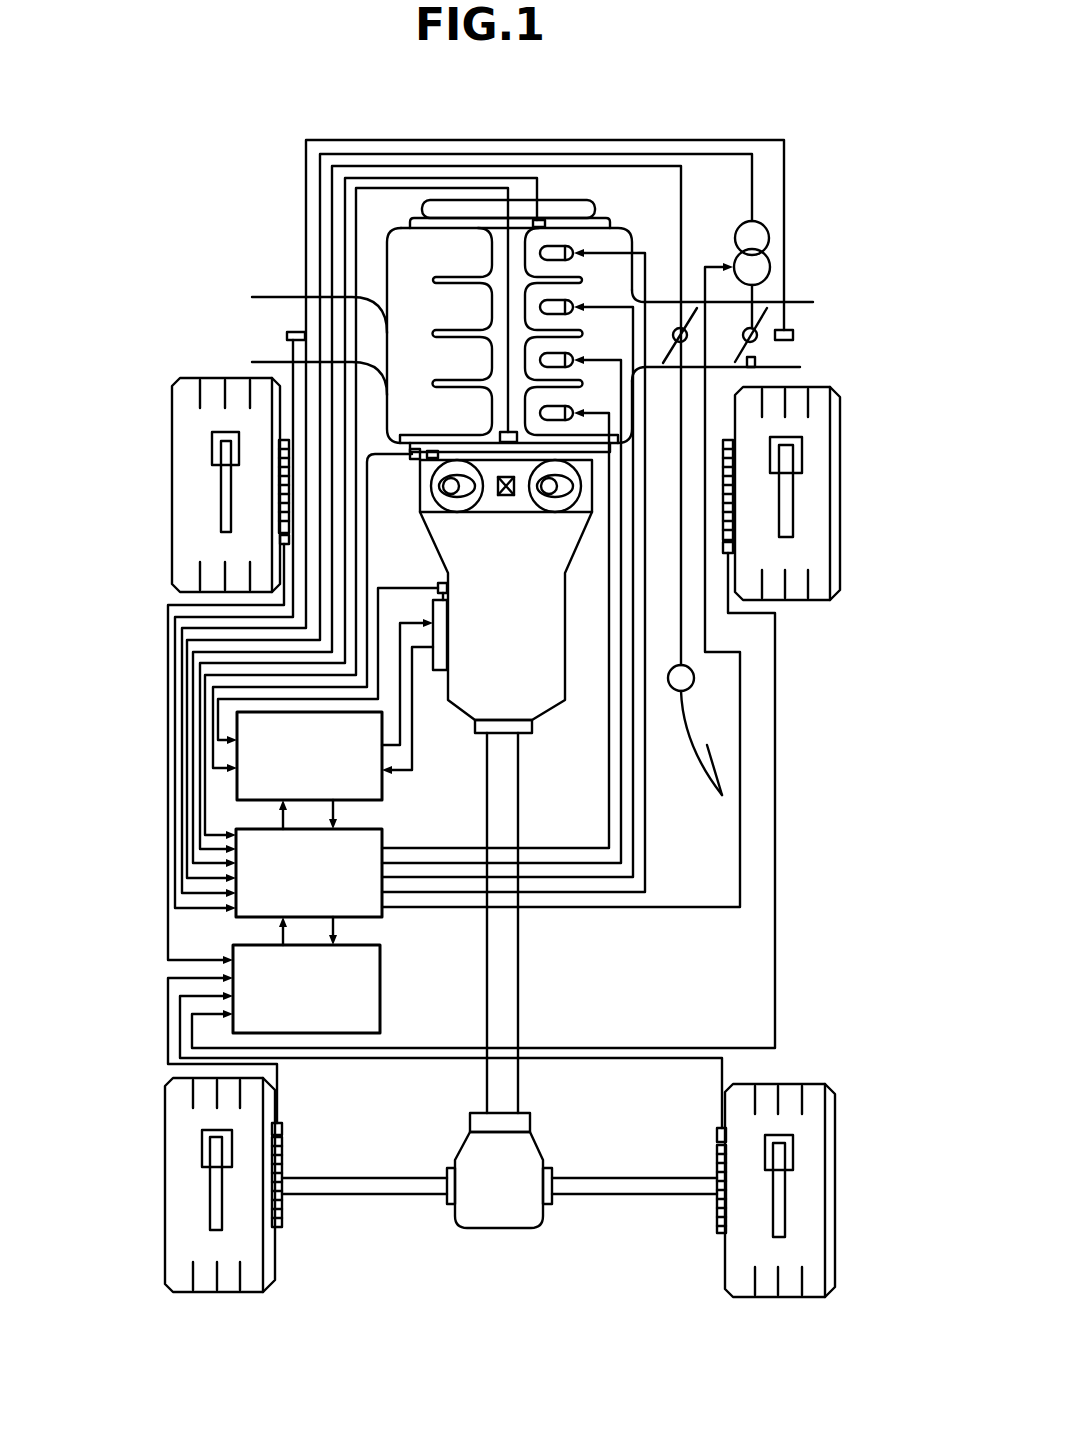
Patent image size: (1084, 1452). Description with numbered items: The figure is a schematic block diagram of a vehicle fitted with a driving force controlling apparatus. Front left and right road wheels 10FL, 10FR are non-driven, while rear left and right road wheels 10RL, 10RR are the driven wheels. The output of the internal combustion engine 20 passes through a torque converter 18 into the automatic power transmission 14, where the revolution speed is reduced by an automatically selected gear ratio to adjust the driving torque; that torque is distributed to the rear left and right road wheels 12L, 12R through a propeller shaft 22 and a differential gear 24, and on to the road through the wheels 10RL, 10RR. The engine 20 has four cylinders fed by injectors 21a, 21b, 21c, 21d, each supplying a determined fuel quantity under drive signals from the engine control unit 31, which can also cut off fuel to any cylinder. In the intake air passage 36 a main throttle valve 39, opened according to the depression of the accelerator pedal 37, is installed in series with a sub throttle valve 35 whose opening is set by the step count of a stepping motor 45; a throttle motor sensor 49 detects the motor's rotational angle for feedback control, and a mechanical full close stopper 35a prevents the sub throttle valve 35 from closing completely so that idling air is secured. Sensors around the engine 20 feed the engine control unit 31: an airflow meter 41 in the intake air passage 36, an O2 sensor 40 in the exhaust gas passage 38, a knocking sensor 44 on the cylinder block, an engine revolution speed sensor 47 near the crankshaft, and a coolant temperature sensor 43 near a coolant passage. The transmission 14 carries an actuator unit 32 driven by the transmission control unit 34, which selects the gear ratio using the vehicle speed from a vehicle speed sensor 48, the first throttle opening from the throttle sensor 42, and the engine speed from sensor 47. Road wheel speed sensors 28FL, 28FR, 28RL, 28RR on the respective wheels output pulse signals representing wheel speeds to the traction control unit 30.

The front left road wheel 10FL is at (172, 420).
The front right road wheel 10FR is at (840, 425).
The rear left road wheel 10RL is at (165, 1110).
The rear right road wheel 10RR is at (835, 1125).
The rear left road wheel (axle side) 12L is at (350, 1194).
The rear right road wheel (axle side) 12R is at (625, 1194).
The automatic power transmission 14 is at (548, 706).
The torque converter 18 is at (420, 505).
The internal combustion engine 20 is at (600, 224).
The injector 21a is at (540, 253).
The injector 21b is at (540, 307).
The injector 21c is at (540, 360).
The injector 21d is at (540, 413).
The propeller shaft 22 is at (518, 965).
The differential gear 24 is at (545, 1138).
The road wheel speed sensor 28FL is at (280, 539).
The road wheel speed sensor 28FR is at (733, 548).
The road wheel speed sensor 28RL is at (283, 1130).
The road wheel speed sensor 28RR is at (717, 1135).
The traction control unit 30 is at (380, 975).
The engine control unit 31 is at (382, 910).
The actuator unit 32 is at (441, 672).
The transmission control unit 34 is at (382, 790).
The sub throttle valve 35 is at (768, 305).
The full close stopper 35a is at (757, 362).
The intake air passage 36 is at (800, 368).
The accelerator pedal 37 is at (713, 788).
The exhaust gas passage 38 is at (262, 296).
The main throttle valve 39 is at (697, 305).
The O2 sensor 40 is at (287, 337).
The airflow meter 41 is at (795, 333).
The throttle sensor 42 is at (678, 290).
The coolant temperature sensor 43 is at (540, 218).
The knocking sensor 44 is at (500, 436).
The stepping motor 45 is at (770, 258).
The engine revolution speed sensor 47 is at (415, 459).
The vehicle speed sensor 48 is at (440, 583).
The throttle motor sensor 49 is at (752, 221).